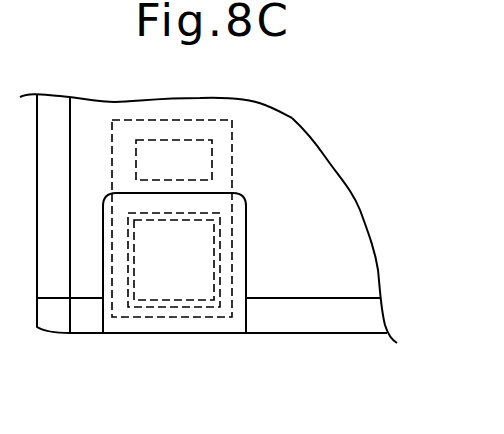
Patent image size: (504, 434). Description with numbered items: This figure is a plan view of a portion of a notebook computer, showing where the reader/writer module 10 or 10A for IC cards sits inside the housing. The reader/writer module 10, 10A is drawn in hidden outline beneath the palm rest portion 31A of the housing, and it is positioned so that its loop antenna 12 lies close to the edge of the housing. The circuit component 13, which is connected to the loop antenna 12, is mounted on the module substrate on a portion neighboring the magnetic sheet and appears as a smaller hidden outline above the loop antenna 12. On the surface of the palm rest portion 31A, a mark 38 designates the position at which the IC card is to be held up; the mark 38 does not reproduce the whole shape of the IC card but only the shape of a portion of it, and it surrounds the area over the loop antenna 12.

The reader/writer module 10 is at (233, 185).
The reader/writer module 10A is at (198, 121).
The loop antenna 12 is at (221, 260).
The circuit component 13 is at (162, 150).
The palm rest portion 31A is at (272, 133).
The mark 38 is at (246, 213).